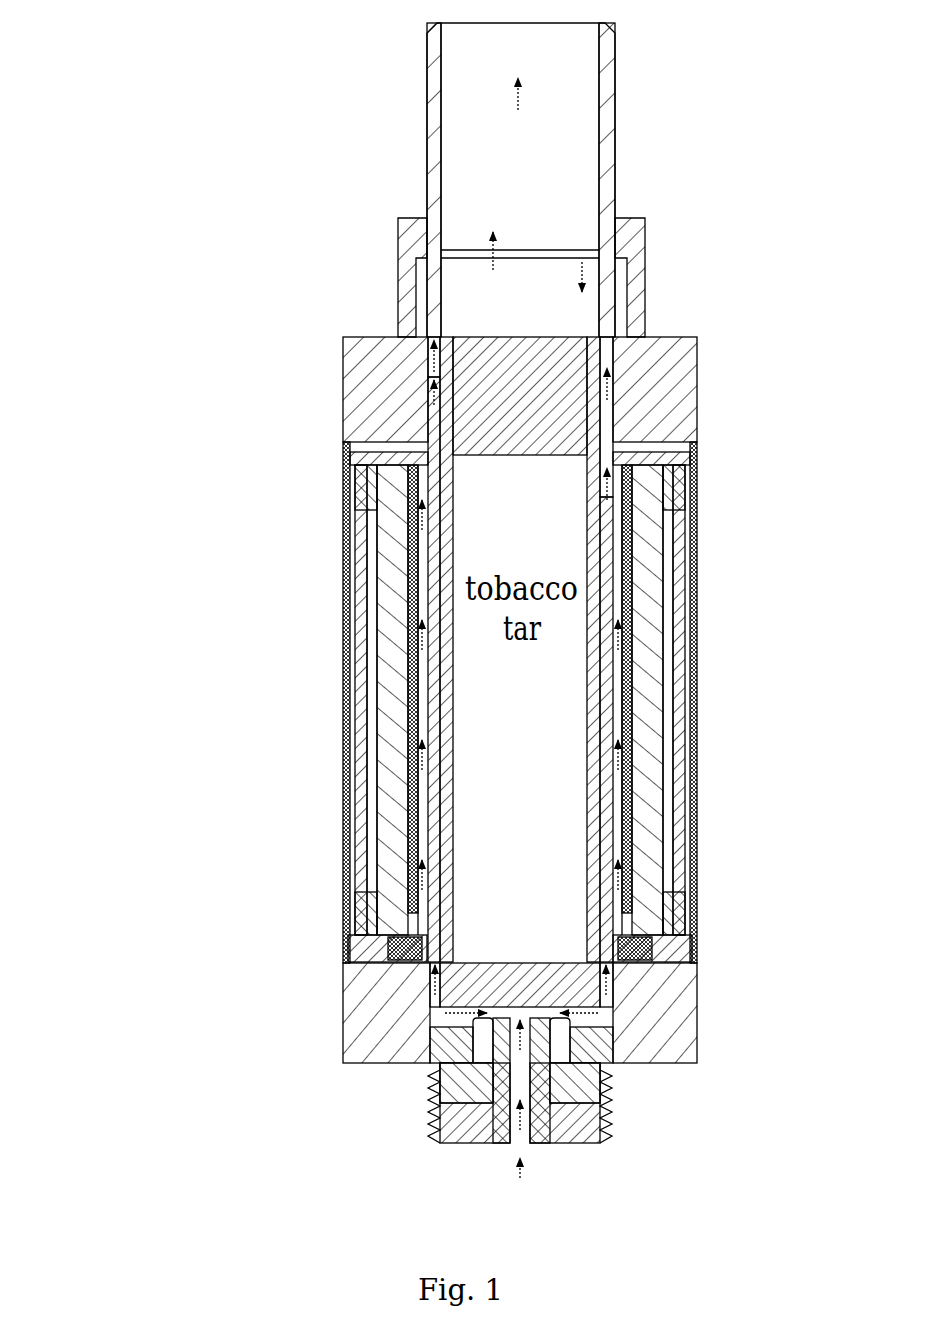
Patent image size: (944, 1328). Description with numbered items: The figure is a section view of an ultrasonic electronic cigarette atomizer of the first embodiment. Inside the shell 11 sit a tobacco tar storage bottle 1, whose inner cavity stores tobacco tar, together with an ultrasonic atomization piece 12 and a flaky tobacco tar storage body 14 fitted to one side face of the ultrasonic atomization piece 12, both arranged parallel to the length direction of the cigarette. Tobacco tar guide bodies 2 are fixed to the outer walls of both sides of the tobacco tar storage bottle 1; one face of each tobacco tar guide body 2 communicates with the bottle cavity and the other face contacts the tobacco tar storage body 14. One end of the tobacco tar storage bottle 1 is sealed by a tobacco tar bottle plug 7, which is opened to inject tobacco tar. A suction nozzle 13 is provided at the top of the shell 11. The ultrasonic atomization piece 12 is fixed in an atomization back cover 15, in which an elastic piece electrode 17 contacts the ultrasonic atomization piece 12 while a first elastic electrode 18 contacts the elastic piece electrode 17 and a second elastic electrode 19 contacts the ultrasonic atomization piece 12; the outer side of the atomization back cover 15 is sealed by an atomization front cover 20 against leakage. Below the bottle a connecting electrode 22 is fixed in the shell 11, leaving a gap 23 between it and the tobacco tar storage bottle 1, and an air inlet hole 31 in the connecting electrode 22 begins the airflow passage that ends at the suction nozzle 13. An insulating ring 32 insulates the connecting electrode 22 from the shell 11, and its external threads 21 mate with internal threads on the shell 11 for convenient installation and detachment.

The tobacco tar storage bottle 1 is at (609, 520).
The tobacco tar guide body 2 is at (613, 582).
The tobacco tar bottle plug 7 is at (567, 339).
The shell 11 is at (341, 392).
The ultrasonic atomization piece 12 is at (386, 770).
The suction nozzle 13 is at (428, 140).
The tobacco tar storage body 14 is at (409, 865).
The atomization back cover 15 is at (353, 462).
The elastic piece electrode 17 is at (353, 655).
The first elastic electrode 18 is at (353, 960).
The second elastic electrode 19 is at (352, 944).
The atomization front cover 20 is at (341, 565).
The external threads 21 is at (429, 1070).
The connecting electrode 22 is at (446, 1132).
The gap 23 is at (605, 1004).
The air inlet hole 31 is at (522, 1076).
The insulating ring 32 is at (441, 1087).